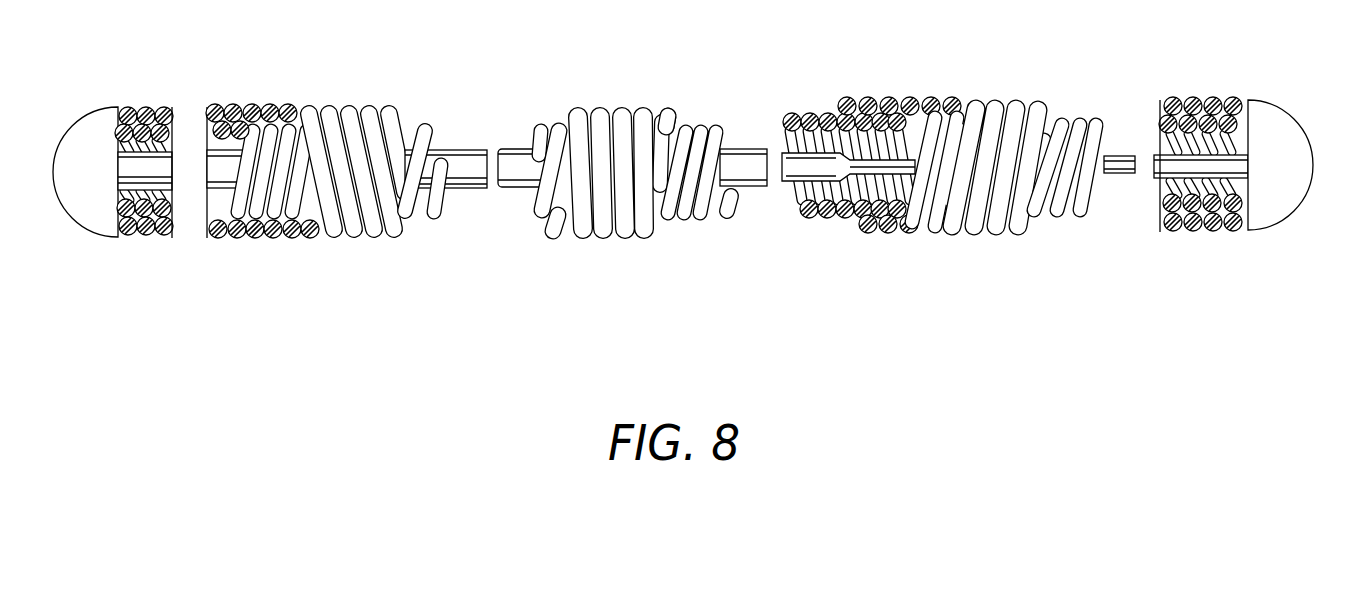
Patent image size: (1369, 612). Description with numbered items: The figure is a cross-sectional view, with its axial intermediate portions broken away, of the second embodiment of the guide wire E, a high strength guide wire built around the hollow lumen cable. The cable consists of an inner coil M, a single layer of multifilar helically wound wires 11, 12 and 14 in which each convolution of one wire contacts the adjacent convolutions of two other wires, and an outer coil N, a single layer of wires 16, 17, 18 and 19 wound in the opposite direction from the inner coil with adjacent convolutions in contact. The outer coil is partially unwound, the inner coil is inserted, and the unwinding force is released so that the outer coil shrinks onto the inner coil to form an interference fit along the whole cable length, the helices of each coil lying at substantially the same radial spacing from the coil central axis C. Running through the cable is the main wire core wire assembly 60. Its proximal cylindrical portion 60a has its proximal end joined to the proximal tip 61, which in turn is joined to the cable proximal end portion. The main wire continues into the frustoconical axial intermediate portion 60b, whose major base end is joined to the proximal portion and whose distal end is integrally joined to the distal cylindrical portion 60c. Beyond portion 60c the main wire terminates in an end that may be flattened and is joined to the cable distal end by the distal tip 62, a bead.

The wire 11 is at (812, 217).
The wire 12 is at (826, 217).
The wire 14 is at (863, 230).
The wire 16 is at (887, 230).
The wire 18 is at (910, 230).
The wire 17 is at (352, 108).
The wire 19 is at (393, 108).
The main wire core wire assembly 60 is at (740, 160).
The proximal cylindrical portion 60a is at (466, 186).
The frustoconical axial intermediate portion 60b is at (793, 233).
The distal cylindrical portion 60c is at (1158, 180).
The proximal tip 61 is at (78, 207).
The distal tip 62 is at (1275, 192).
The coil central axis C is at (53, 169).
The inner coil M is at (560, 125).
The outer coil N is at (172, 238).
The guide wire E is at (810, 110).